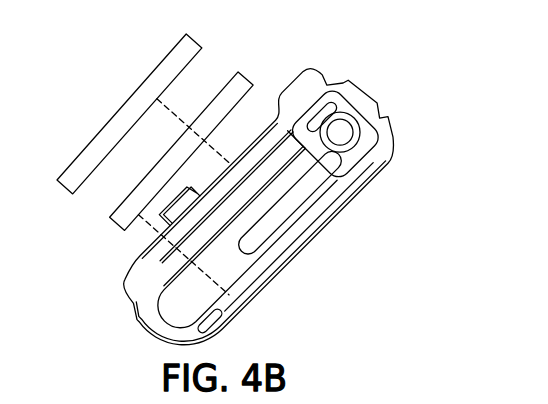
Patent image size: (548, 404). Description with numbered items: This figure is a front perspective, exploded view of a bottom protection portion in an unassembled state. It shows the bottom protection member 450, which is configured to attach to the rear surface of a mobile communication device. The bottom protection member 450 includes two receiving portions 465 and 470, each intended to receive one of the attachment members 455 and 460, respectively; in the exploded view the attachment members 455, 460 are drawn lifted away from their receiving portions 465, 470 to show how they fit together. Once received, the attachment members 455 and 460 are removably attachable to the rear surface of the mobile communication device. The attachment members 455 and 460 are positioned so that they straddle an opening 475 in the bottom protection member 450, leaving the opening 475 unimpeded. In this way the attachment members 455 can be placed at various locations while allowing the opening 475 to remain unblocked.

The bottom protection member 450 is at (393, 153).
The attachment member 455 is at (62, 189).
The attachment member 460 is at (115, 224).
The receiving portion 465 is at (262, 158).
The receiving portion 470 is at (263, 265).
The opening 475 is at (290, 192).